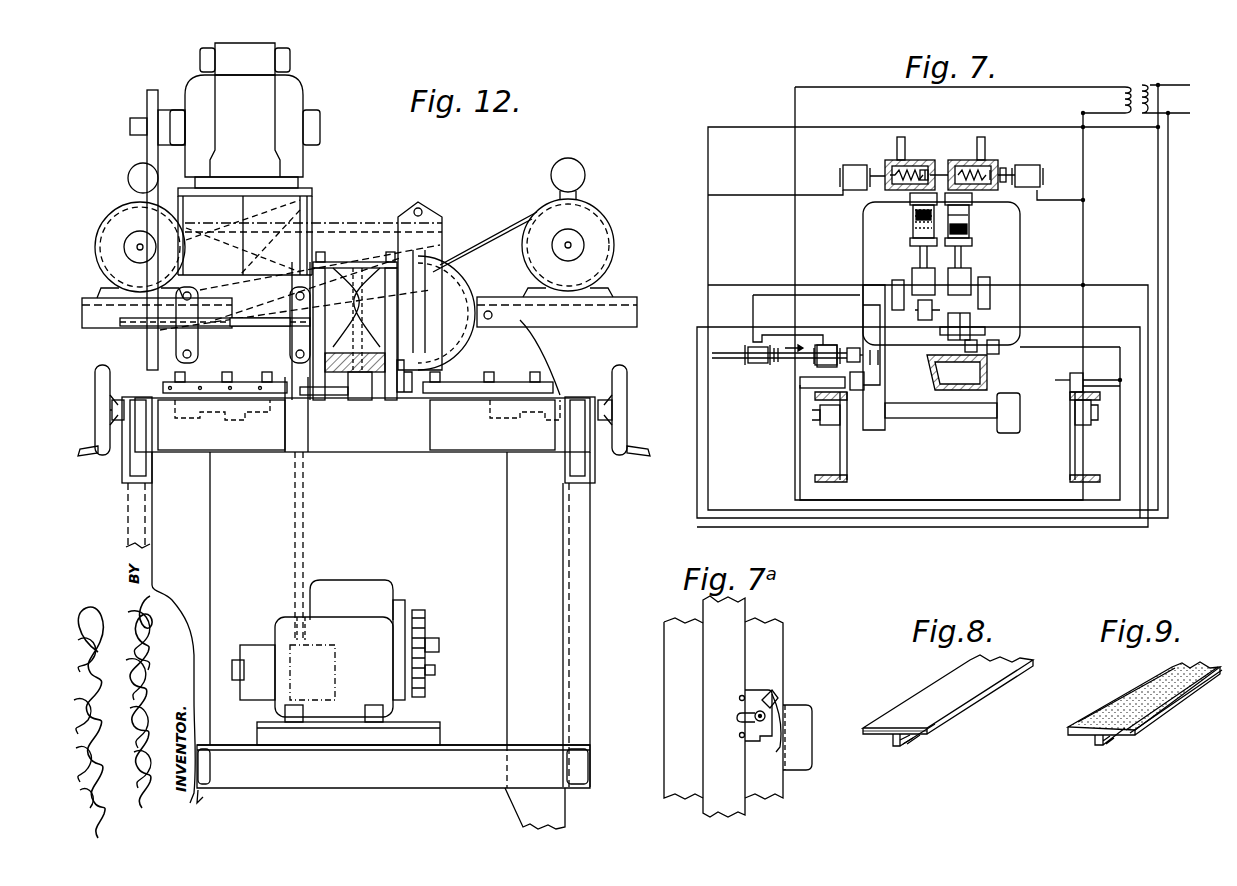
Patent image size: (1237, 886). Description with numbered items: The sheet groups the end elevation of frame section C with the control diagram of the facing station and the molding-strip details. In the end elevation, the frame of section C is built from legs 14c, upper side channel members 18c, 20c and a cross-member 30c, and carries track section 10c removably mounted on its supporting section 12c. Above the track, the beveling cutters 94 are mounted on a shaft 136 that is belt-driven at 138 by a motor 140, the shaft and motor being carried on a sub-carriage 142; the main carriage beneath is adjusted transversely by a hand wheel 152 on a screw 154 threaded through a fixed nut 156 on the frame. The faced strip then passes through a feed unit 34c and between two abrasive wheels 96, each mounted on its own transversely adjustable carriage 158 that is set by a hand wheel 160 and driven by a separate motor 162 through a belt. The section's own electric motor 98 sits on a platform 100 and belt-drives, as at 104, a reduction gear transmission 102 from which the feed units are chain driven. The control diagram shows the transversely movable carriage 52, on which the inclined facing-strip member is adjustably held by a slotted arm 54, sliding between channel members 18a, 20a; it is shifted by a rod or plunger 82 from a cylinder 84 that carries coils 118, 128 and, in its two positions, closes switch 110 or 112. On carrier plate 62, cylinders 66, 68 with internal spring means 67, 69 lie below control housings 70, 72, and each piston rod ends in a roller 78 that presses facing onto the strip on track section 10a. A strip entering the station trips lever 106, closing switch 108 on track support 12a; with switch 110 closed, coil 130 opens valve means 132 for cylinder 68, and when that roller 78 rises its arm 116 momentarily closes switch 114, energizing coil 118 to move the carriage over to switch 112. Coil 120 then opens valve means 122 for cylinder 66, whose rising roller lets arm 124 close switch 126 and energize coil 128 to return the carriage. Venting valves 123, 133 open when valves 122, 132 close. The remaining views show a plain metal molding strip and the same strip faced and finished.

In FIG. 12, the motor 140 is at (304, 96).
In FIG. 12, the sub-carriage 142 is at (292, 214).
In FIG. 12, the belt drive 138 is at (150, 208).
In FIG. 12, the motor 162 is at (112, 242).
In FIG. 12, the transversely adjustable carriage 158 is at (127, 325).
In FIG. 12, the abrasive wheels 96 is at (308, 244).
In FIG. 12, the feed units 34c is at (372, 266).
In FIG. 12, the beveling cutters 94 is at (343, 268).
In FIG. 12, the shaft 136 is at (210, 327).
In FIG. 12, the screw 154 is at (222, 414).
In FIG. 12, the fixed nut 156 is at (205, 425).
In FIG. 12, the legs 14c is at (205, 540).
In FIG. 12, the track section 10c is at (340, 395).
In FIG. 12, the supporting section 12c is at (398, 393).
In FIG. 12, the upper side channel member 20c is at (134, 478).
In FIG. 12, the upper side channel member 18c is at (572, 462).
In FIG. 12, the hand wheel 152 is at (95, 455).
In FIG. 12, the hand wheel 160 is at (622, 456).
In FIG. 12, the reduction gear transmission 102 is at (380, 580).
In FIG. 12, the electric motor 98 is at (378, 640).
In FIG. 12, the belt drive 104 is at (427, 620).
In FIG. 12, the platform 100 is at (415, 728).
In FIG. 12, the cross-member 30c is at (320, 772).
In FIG. 7, the coil 120 is at (850, 168).
In FIG. 7, the valve means 122 is at (908, 160).
In FIG. 7, the control housing 70 is at (897, 160).
In FIG. 7, the venting valve 123 is at (926, 168).
In FIG. 7, the venting valve 133 is at (962, 160).
In FIG. 7, the valve means 132 is at (985, 160).
In FIG. 7, the control housing 72 is at (1005, 170).
In FIG. 7, the coil 130 is at (1036, 165).
In FIG. 7, the carrier plate 62 is at (865, 231).
In FIG. 7, the cylinder 66 is at (915, 232).
In FIG. 7, the spring means 67 is at (915, 215).
In FIG. 7, the cylinder 68 is at (968, 230).
In FIG. 7, the spring means 69 is at (968, 215).
In FIG. 7, the arm 124 is at (917, 270).
In FIG. 7, the normally open switch 114 is at (982, 277).
In FIG. 7, the switch 126 is at (895, 280).
In FIG. 7, the roller 78 is at (922, 322).
In FIG. 7, the track section 10a is at (948, 333).
In FIG. 7a, the track section 10a is at (705, 657).
In FIG. 7, the arm 116 is at (826, 345).
In FIG. 7, the lever 106 is at (980, 343).
In FIG. 7a, the lever 106 is at (735, 725).
In FIG. 7, the normally open switch 108 is at (1000, 347).
In FIG. 7a, the normally open switch 108 is at (803, 768).
In FIG. 7, the track support section 12a is at (957, 372).
In FIG. 7a, the track support section 12a is at (773, 645).
In FIG. 7, the carriage 52 is at (878, 398).
In FIG. 7, the slotted arm 54 is at (937, 418).
In FIG. 7, the rod or plunger 82 is at (850, 348).
In FIG. 7, the cylinder 84 is at (765, 375).
In FIG. 7, the coil 128 is at (755, 366).
In FIG. 7, the coil 118 is at (825, 335).
In FIG. 7, the normally open switch 110 is at (825, 377).
In FIG. 7, the upper horizontal channel member 18a is at (847, 460).
In FIG. 7, the upper horizontal channel member 20a is at (1070, 452).
In FIG. 7, the normally open switch 112 is at (1075, 373).